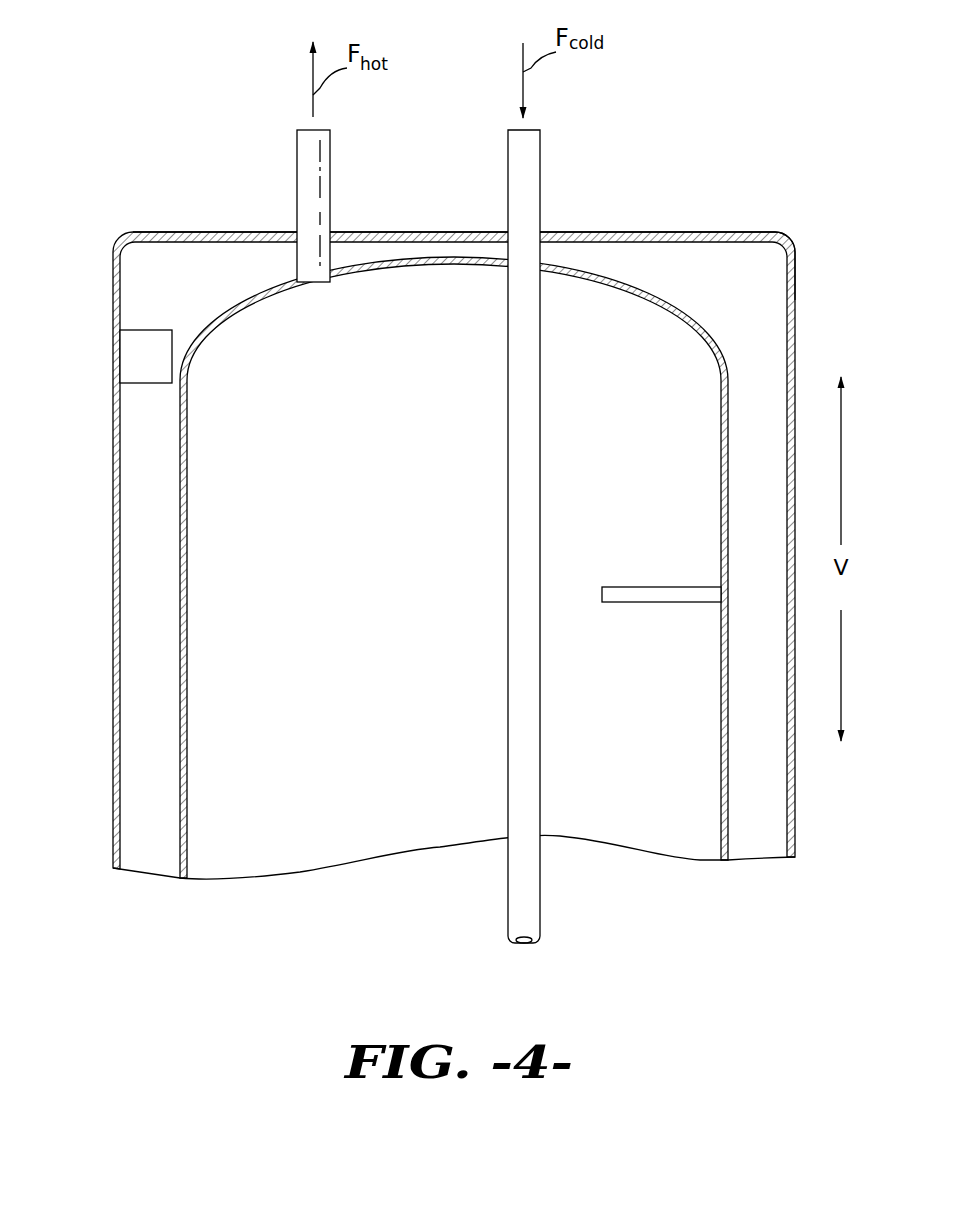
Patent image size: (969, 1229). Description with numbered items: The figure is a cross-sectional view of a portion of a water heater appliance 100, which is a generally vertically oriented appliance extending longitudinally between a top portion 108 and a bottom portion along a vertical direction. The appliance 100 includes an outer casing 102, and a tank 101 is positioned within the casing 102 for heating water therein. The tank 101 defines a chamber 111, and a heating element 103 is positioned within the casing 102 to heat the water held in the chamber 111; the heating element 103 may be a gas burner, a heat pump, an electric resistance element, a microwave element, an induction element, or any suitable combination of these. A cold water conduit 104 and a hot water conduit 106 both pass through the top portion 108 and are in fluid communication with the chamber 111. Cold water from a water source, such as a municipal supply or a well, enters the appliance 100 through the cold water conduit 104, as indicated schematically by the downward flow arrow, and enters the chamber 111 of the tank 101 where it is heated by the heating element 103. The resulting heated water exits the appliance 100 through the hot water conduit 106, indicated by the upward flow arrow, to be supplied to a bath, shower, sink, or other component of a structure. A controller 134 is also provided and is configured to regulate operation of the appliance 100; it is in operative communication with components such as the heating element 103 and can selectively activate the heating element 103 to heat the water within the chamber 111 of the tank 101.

The water heater appliance 100 is at (172, 120).
The tank 101 is at (712, 336).
The casing 102 is at (95, 563).
The heating element 103 is at (652, 605).
The cold water conduit 104 is at (560, 182).
The hot water conduit 106 is at (343, 182).
The top portion 108 is at (805, 240).
The chamber 111 is at (378, 537).
The controller 134 is at (130, 358).